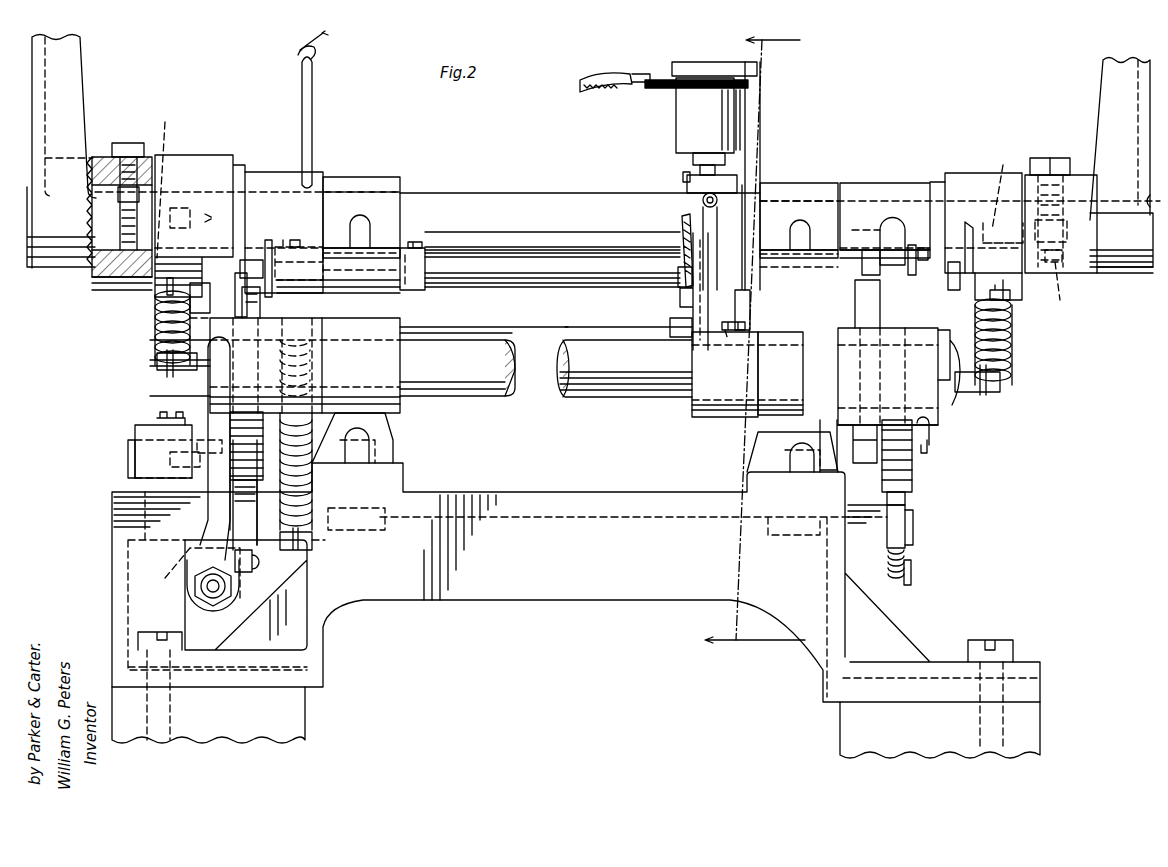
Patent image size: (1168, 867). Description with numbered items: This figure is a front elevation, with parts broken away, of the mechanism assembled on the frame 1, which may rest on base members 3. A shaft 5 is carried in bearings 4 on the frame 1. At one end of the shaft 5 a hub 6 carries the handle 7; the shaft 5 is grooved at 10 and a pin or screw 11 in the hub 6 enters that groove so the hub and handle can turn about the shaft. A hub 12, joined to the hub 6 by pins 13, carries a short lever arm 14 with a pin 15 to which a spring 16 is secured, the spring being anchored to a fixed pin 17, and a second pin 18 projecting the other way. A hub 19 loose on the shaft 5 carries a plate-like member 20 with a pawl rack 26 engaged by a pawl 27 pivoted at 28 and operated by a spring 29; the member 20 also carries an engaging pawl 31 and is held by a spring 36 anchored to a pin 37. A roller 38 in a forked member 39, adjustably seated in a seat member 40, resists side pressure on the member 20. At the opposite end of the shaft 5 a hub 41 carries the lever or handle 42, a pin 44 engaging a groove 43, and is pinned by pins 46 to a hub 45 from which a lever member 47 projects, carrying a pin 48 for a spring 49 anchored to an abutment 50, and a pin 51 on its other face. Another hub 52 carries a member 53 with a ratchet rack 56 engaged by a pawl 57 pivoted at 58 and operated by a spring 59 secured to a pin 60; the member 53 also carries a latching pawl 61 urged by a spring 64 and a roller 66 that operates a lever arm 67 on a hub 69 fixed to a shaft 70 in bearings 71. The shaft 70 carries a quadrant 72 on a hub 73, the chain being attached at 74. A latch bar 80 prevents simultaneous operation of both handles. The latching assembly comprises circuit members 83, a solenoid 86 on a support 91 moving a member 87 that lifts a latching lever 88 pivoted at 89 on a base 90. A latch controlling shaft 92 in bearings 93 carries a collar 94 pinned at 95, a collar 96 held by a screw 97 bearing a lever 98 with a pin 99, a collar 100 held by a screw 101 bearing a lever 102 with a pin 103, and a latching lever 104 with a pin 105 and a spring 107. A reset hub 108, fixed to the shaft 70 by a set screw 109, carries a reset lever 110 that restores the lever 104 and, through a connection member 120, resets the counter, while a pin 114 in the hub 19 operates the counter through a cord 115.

The frame 1 is at (112, 522).
The base members 3 is at (292, 730).
The bearings 4 is at (395, 180).
The shaft 5 is at (540, 203).
The hub 6 is at (96, 157).
The handle 7 is at (68, 60).
The groove 10 is at (124, 262).
The pin or screw 11 is at (131, 157).
The hub 12 is at (186, 160).
The pins 13 is at (169, 183).
The lever arm 14 is at (210, 308).
The pin 15 is at (167, 290).
The spring 16 is at (155, 335).
The fixed pin or abutment 17 is at (160, 372).
The second pin 18 is at (239, 295).
The hub 19 is at (280, 180).
The plate-like member 20 is at (262, 590).
The pawl rack 26 is at (252, 455).
The pawl 27 is at (250, 480).
The pivot 28 is at (188, 548).
The spring 29 is at (250, 575).
The engaging pawl 31 is at (260, 304).
The spring 36 is at (312, 432).
The pin or abutment 37 is at (302, 540).
The roller 38 is at (192, 452).
The forked member 39 is at (128, 447).
The seat member 40 is at (140, 430).
The hub 41 is at (1112, 273).
The lever or handle 42 is at (1108, 92).
The groove 43 is at (1063, 284).
The pin 44 is at (1058, 162).
The hub 45 is at (978, 180).
The pins 46 is at (1044, 210).
The lever member 47 is at (975, 285).
The pin 48 is at (1010, 300).
The spring 49 is at (1012, 348).
The pin or fixed abutment 50 is at (1000, 383).
The pin 51 is at (958, 395).
The hub 52 is at (893, 195).
The member 53 is at (887, 233).
The ratchet rack 56 is at (912, 478).
The pawl 57 is at (905, 498).
The pivot 58 is at (913, 525).
The spring 59 is at (910, 552).
The pin 60 is at (912, 572).
The latching pawl 61 is at (985, 280).
The spring 64 is at (930, 440).
The roller 66 is at (860, 315).
The lever arm 67 is at (866, 460).
The hub 69 is at (843, 432).
The shaft 70 is at (495, 397).
The bearings 71 is at (388, 416).
The quadrant 72 is at (210, 404).
The hub 73 is at (318, 325).
The chain attachment 74 is at (213, 612).
The latch bar 80 is at (540, 338).
The circuit members 83 is at (598, 82).
The solenoid 86 is at (690, 122).
The member 87 is at (693, 157).
The latching lever 88 is at (700, 170).
The pivot 89 is at (685, 178).
The abutment or base 90 is at (742, 175).
The support 91 is at (754, 65).
The latch controlling shaft 92 is at (471, 286).
The bearings 93 is at (384, 258).
The positioning collar 94 is at (422, 290).
The pin 95 is at (416, 242).
The second positioning collar 96 is at (300, 256).
The pin or screw 97 is at (292, 240).
The lever 98 is at (269, 240).
The pin 99 is at (252, 260).
The collar 100 is at (912, 245).
The pin or screw 101 is at (885, 252).
The lever 102 is at (925, 236).
The pin 103 is at (940, 275).
The latching lever 104 is at (703, 209).
The pin 105 is at (672, 320).
The spring 107 is at (703, 198).
The hub 108 is at (735, 412).
The set screw 109 is at (740, 325).
The reset lever 110 is at (697, 312).
The pin or projection 114 is at (312, 108).
The cord or wire 115 is at (326, 48).
The connection member 120 is at (682, 222).